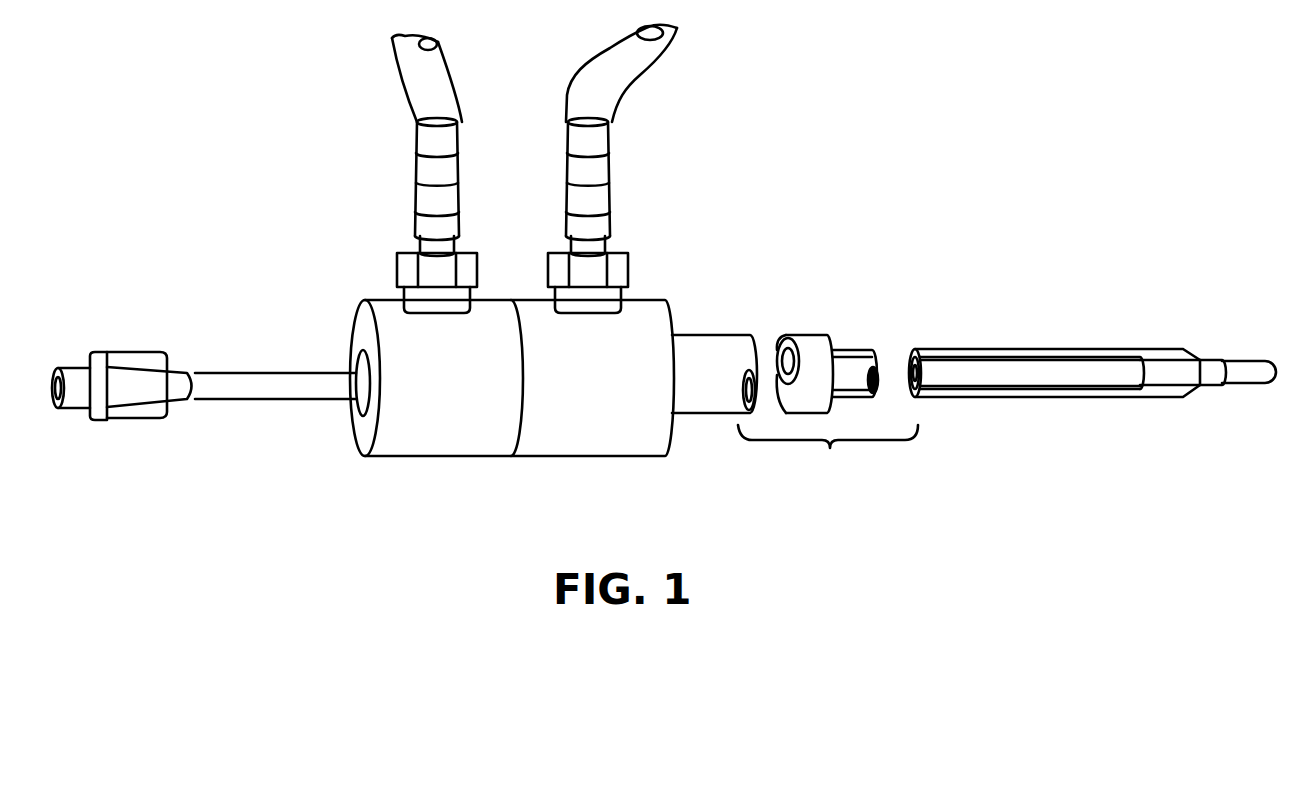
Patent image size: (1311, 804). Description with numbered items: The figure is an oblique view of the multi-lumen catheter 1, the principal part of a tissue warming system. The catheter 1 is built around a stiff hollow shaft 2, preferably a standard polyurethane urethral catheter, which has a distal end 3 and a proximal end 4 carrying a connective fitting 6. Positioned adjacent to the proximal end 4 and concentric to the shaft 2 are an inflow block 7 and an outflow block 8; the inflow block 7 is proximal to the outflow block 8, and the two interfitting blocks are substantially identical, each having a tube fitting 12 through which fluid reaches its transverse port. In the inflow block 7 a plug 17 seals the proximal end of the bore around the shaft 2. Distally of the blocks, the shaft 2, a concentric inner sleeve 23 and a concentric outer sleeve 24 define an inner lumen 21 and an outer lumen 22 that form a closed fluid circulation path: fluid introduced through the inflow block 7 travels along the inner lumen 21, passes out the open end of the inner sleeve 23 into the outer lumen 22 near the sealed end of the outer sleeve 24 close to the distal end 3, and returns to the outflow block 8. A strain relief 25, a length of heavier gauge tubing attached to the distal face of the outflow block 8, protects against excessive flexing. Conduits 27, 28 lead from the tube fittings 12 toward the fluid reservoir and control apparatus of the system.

The multi-lumen catheter 1 is at (792, 176).
The hollow shaft 2 is at (268, 372).
The distal end 3 is at (1270, 347).
The proximal end 4 is at (192, 354).
The connective fitting 6 is at (82, 410).
The inflow block 7 is at (420, 458).
The outflow block 8 is at (605, 458).
The tube fitting 12 is at (397, 270).
The plug 17 is at (356, 416).
The inner lumen 21 is at (1013, 390).
The outer lumen 22 is at (1070, 396).
The inner sleeve 23 is at (1050, 356).
The outer sleeve 24 is at (982, 348).
The strain relief 25 is at (718, 414).
The conduit 27 is at (413, 117).
The conduit 28 is at (645, 72).